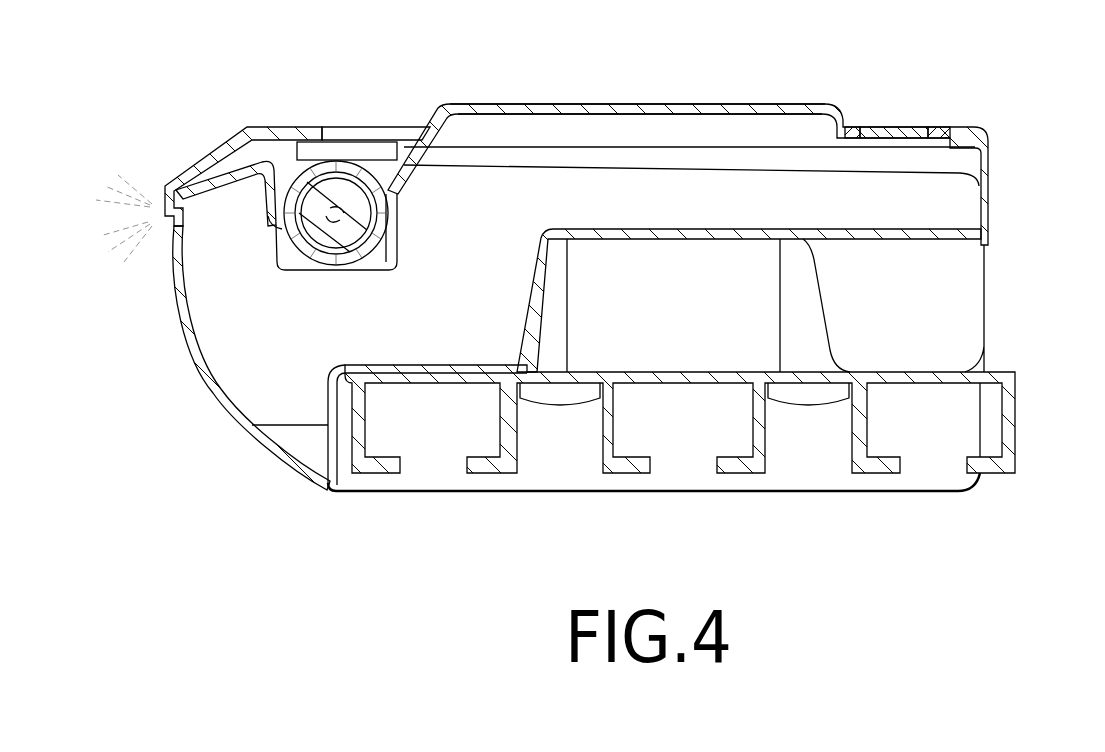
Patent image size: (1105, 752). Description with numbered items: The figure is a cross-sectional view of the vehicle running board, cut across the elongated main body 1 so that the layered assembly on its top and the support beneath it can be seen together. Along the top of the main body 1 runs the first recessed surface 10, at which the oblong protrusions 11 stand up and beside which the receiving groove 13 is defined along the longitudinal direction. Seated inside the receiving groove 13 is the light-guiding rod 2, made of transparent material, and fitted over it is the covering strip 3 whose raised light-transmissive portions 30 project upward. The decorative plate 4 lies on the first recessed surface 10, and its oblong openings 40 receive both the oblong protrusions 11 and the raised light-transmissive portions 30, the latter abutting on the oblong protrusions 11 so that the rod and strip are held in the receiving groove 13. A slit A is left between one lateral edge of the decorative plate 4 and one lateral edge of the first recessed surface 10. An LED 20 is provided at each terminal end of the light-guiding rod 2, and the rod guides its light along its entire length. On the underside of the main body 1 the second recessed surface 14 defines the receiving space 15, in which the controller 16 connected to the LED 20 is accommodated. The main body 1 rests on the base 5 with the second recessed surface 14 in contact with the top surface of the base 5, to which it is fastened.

The main body 1 is at (990, 170).
The light-guiding rod 2 is at (273, 224).
The covering strip 3 is at (345, 150).
The decorative plate 4 is at (883, 133).
The base 5 is at (1016, 431).
The first recessed surface 10 is at (938, 138).
The oblong protrusions 11 is at (648, 104).
The receiving groove 13 is at (281, 183).
The second recessed surface 14 is at (420, 367).
The receiving space 15 is at (797, 296).
The controller 16 is at (720, 331).
The LED 20 is at (268, 262).
The raised light-transmissive portions 30 is at (391, 133).
The oblong openings 40 is at (849, 127).
The slit A is at (160, 216).